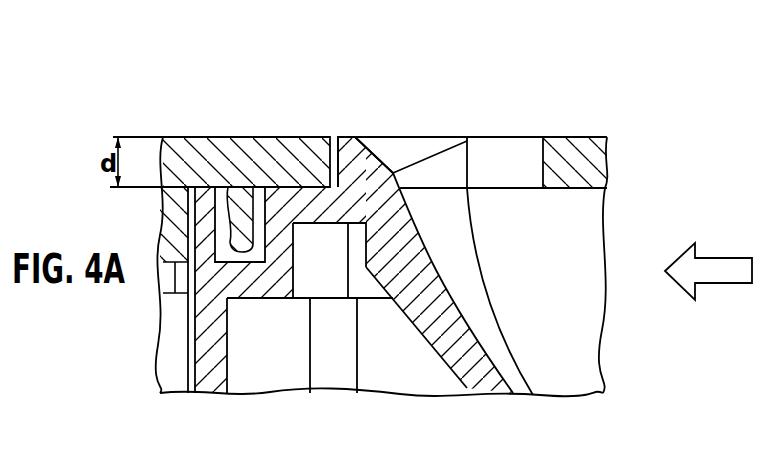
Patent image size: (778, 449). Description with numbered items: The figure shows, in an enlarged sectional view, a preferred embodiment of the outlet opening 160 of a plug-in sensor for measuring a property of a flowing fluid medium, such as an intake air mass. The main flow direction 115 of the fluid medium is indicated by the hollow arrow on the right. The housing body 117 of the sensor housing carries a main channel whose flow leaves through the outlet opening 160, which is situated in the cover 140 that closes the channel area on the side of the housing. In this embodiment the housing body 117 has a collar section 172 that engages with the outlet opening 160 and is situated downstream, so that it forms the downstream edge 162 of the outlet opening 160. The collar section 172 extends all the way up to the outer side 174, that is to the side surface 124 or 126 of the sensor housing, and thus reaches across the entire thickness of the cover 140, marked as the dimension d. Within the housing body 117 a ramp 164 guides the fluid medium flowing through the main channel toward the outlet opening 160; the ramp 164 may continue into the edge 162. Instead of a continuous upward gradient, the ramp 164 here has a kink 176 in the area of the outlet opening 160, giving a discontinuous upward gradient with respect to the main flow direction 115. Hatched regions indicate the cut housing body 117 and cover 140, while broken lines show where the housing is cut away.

The main flow direction 115 is at (722, 272).
The housing body 117 is at (213, 350).
The side surface 124 is at (207, 233).
The side surface 126 is at (207, 233).
The cover 140 is at (587, 163).
The outlet opening 160 is at (483, 130).
The edge 162 is at (394, 138).
The ramp 164 is at (366, 141).
The collar section 172 is at (345, 137).
The outer side 174 is at (193, 118).
The kink 176 is at (395, 172).